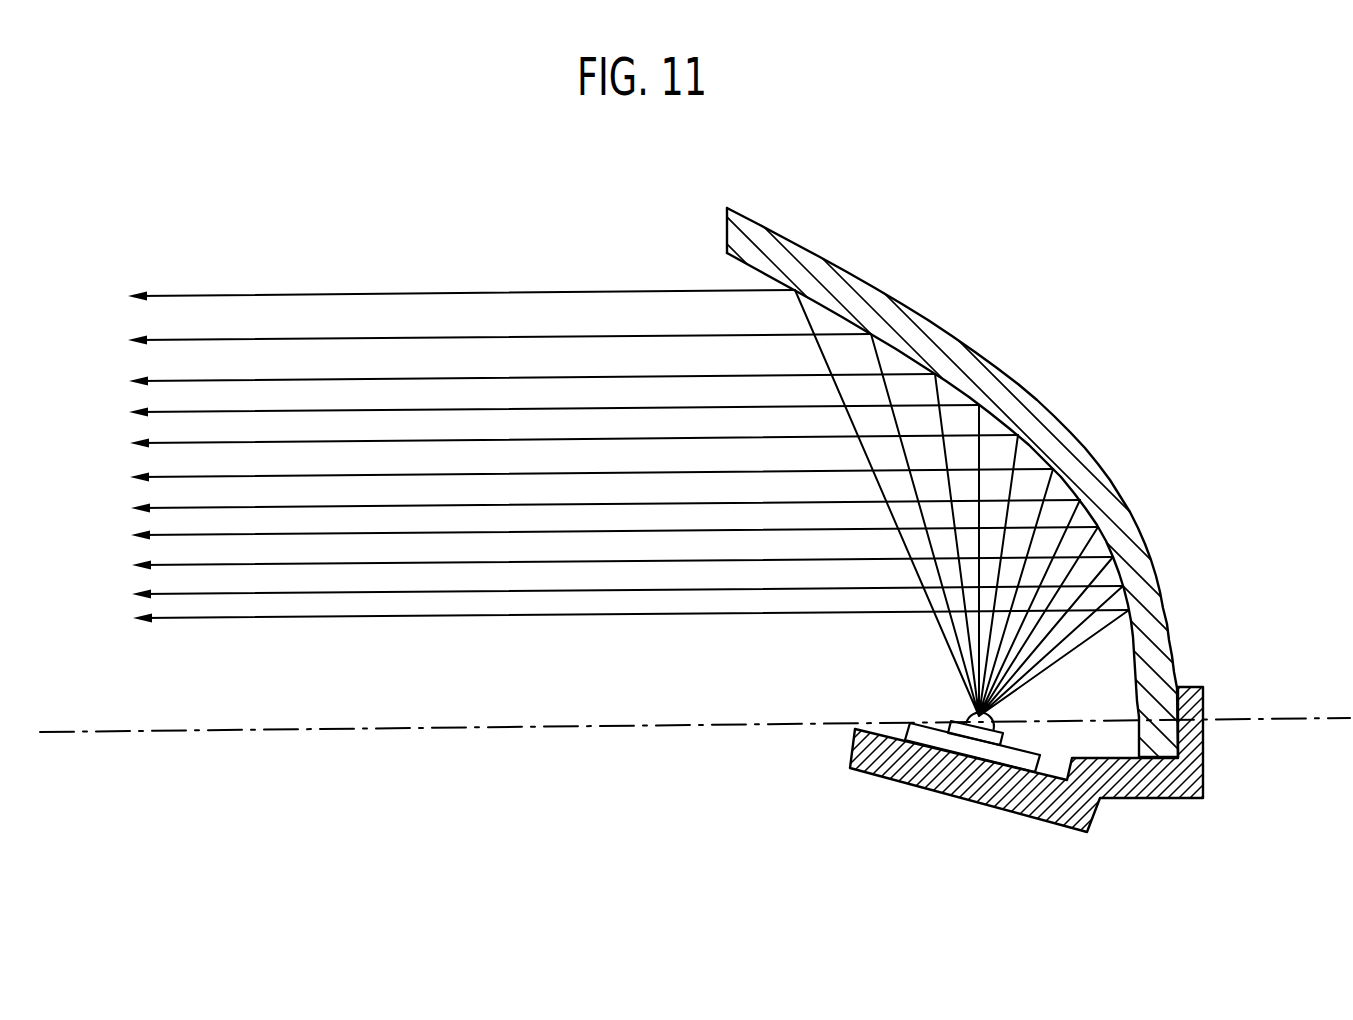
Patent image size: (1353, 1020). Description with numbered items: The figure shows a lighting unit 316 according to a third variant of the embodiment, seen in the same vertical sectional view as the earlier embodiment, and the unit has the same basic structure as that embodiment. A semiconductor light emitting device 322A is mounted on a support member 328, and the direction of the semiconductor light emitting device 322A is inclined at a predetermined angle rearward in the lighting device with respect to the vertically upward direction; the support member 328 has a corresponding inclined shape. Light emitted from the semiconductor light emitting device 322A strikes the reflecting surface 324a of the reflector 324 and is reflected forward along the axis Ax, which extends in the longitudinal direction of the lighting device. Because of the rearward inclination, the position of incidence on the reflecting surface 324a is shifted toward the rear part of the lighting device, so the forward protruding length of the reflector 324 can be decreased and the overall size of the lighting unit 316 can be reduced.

The lighting unit 316 is at (1124, 271).
The reflector 324 is at (1079, 430).
The reflecting surface 324a is at (904, 333).
The semiconductor light emitting device 322A is at (946, 704).
The support member 328 is at (937, 790).
The axis Ax is at (320, 731).